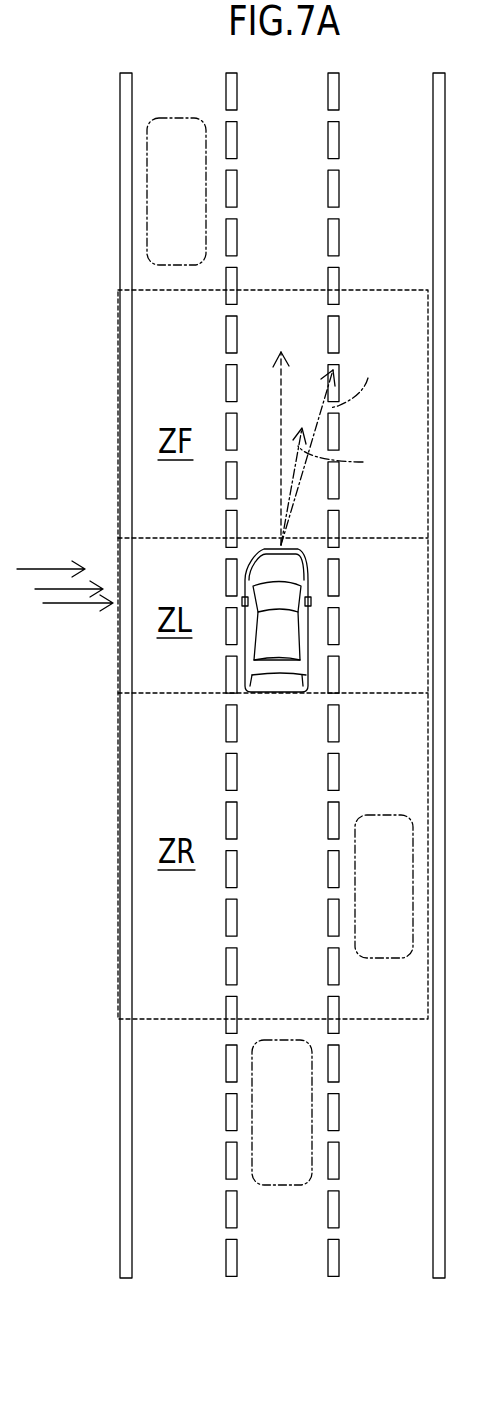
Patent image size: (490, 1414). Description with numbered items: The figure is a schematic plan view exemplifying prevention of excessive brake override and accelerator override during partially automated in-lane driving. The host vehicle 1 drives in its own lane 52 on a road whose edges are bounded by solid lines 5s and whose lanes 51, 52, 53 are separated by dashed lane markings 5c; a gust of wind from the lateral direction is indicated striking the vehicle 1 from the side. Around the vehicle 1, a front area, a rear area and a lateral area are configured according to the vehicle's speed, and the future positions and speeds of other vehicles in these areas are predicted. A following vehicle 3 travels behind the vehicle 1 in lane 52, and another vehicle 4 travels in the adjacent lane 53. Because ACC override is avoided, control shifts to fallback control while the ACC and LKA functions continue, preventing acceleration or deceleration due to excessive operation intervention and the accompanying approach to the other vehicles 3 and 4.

The vehicle 1 is at (307, 605).
The following vehicle 3 is at (312, 1137).
The other vehicle 4 is at (368, 958).
The road shoulder line 5s is at (120, 1257).
The lane dividing line 5c is at (227, 1257).
The left lane 51 is at (177, 1250).
The center lane (host lane) 52 is at (280, 1252).
The right lane 53 is at (385, 1253).